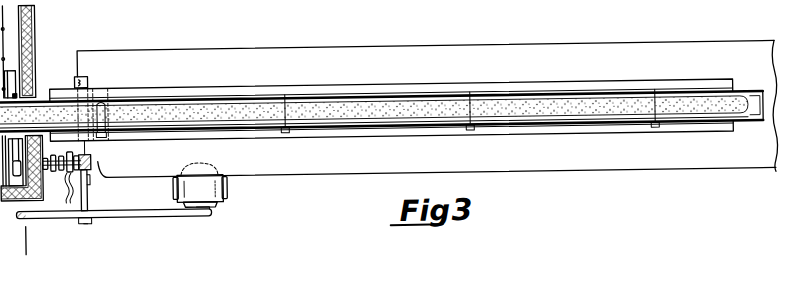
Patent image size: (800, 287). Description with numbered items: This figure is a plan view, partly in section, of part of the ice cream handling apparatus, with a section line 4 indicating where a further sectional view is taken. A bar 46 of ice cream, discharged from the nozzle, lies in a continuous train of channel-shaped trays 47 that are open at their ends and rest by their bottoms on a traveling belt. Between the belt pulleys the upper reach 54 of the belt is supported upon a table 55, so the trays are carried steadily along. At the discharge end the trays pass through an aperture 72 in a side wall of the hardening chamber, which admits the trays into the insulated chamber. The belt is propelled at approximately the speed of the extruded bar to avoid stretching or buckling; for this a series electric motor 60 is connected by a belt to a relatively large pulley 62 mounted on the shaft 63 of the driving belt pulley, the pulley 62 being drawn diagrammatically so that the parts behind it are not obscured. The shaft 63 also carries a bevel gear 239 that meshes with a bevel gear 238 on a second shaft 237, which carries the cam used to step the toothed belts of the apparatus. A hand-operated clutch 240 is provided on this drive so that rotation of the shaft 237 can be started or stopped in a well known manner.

The section line 4 is at (26, 235).
The bar of ice cream 46 is at (688, 108).
The channel-shaped trays 47 is at (343, 96).
The upper reach of the belt 54 is at (200, 84).
The table 55 is at (418, 166).
The series electric motor 60 is at (208, 195).
The pulley 62 is at (114, 214).
The shaft 63 is at (87, 188).
The aperture 72 is at (39, 92).
The shaft 237 is at (66, 168).
The bevel gear 238 is at (72, 153).
The bevel gear 239 is at (89, 149).
The hand-operated clutch 240 is at (74, 191).